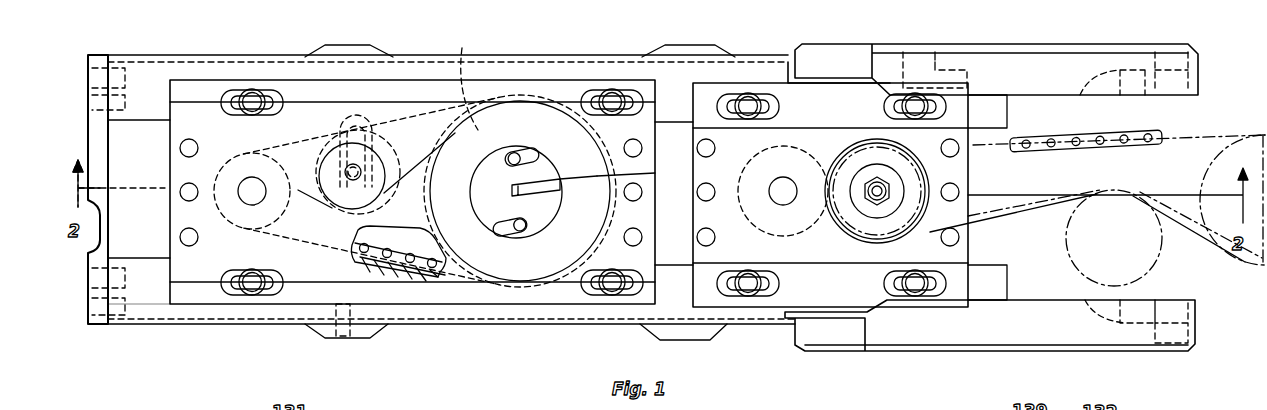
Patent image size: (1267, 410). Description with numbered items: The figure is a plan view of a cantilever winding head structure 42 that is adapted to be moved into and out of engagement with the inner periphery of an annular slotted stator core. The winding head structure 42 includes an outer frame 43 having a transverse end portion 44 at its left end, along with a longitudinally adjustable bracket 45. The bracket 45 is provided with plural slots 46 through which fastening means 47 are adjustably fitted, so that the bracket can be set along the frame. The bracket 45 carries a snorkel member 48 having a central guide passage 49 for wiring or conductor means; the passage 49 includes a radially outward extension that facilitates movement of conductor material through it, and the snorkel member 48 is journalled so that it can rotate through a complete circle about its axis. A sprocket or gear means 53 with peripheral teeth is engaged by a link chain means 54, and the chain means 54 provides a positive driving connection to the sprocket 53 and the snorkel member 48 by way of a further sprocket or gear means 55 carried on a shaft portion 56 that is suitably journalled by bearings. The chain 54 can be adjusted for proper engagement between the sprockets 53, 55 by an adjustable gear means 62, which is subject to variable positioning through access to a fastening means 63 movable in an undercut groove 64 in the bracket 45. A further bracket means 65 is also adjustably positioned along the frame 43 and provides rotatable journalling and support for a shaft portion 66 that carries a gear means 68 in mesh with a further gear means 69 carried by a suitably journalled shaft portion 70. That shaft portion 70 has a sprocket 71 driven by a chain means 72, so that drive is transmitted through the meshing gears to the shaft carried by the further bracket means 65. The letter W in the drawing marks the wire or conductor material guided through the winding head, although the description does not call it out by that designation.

The cantilever winding head structure 42 is at (185, 62).
The outer frame 43 is at (145, 305).
The transverse end portion 44 is at (97, 258).
The longitudinally adjustable bracket 45 is at (180, 163).
The slots 46 is at (270, 100).
The fastening means 47 is at (252, 100).
The snorkel member 48 is at (514, 185).
The guide passage 49 is at (512, 192).
The sprocket or gear means 53 is at (462, 55).
The chain means 54 is at (360, 262).
The further sprocket or gear means 55 is at (250, 240).
The shaft portion 56 is at (252, 187).
The adjustable gear means 62 is at (392, 168).
The fastening means 63 is at (322, 165).
The undercut groove 64 is at (372, 132).
The further bracket means 65 is at (780, 96).
The shaft portion 66 is at (783, 206).
The gear means 68 is at (768, 162).
The further gear means 69 is at (862, 230).
The shaft portion 70 is at (878, 186).
The sprocket 71 is at (836, 160).
The chain means 72 is at (1080, 145).
The web W is at (585, 174).